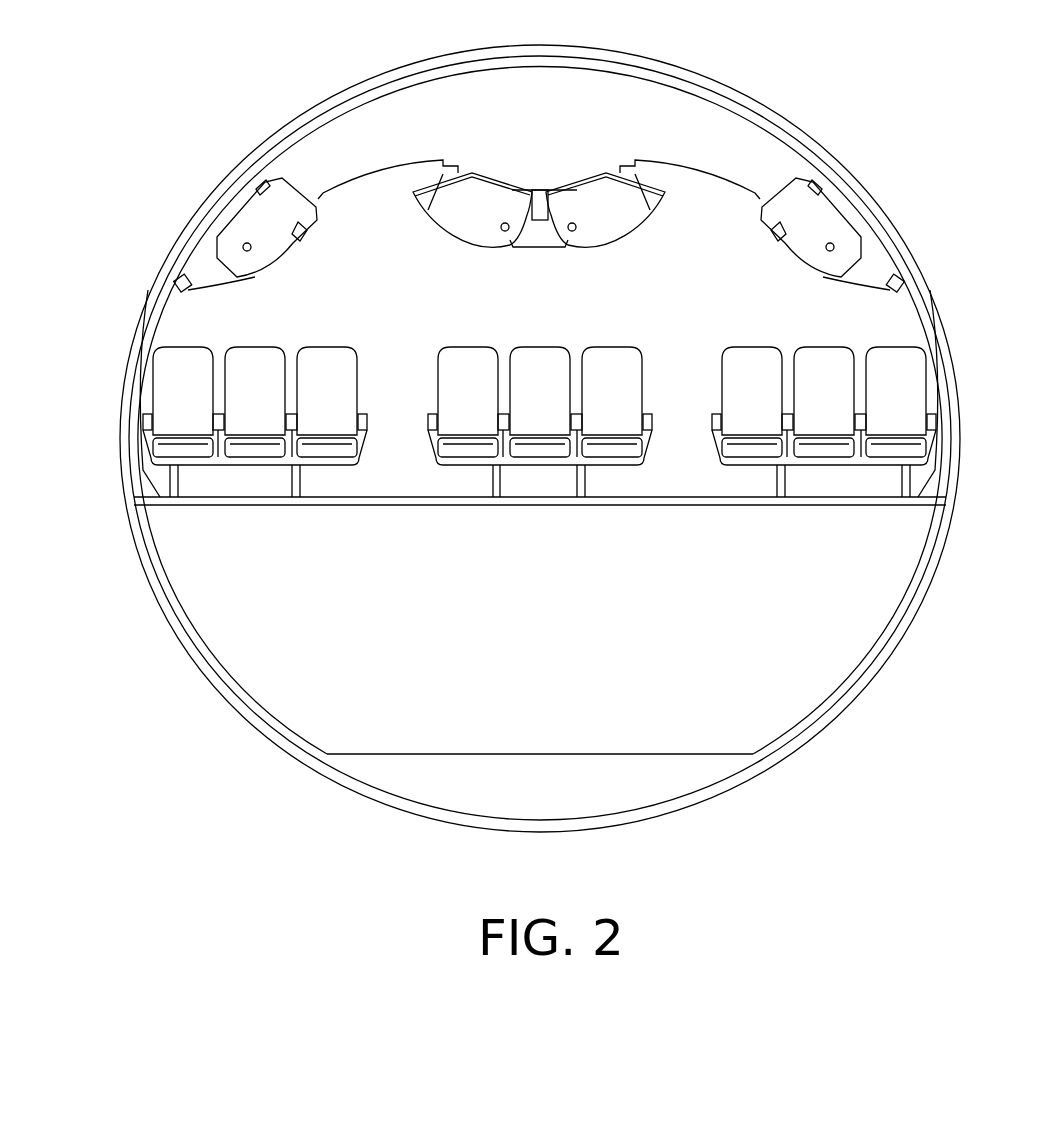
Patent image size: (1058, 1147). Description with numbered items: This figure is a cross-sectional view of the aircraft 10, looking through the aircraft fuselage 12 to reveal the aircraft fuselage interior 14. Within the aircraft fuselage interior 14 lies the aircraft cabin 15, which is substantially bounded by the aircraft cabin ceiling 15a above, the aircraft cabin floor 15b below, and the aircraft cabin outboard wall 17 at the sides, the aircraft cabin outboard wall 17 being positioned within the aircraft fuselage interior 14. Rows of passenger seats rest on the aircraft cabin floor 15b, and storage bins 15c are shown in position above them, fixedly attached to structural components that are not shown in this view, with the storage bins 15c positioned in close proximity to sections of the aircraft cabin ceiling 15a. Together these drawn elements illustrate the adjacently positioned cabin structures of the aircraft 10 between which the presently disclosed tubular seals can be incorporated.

The aircraft 10 is at (148, 253).
The aircraft fuselage 12 is at (122, 428).
The aircraft fuselage interior 14 is at (237, 183).
The aircraft cabin 15 is at (539, 164).
The aircraft cabin ceiling 15a is at (414, 158).
The aircraft cabin floor 15b is at (396, 497).
The storage bins 15c is at (300, 255).
The aircraft cabin outboard wall 17 is at (168, 318).